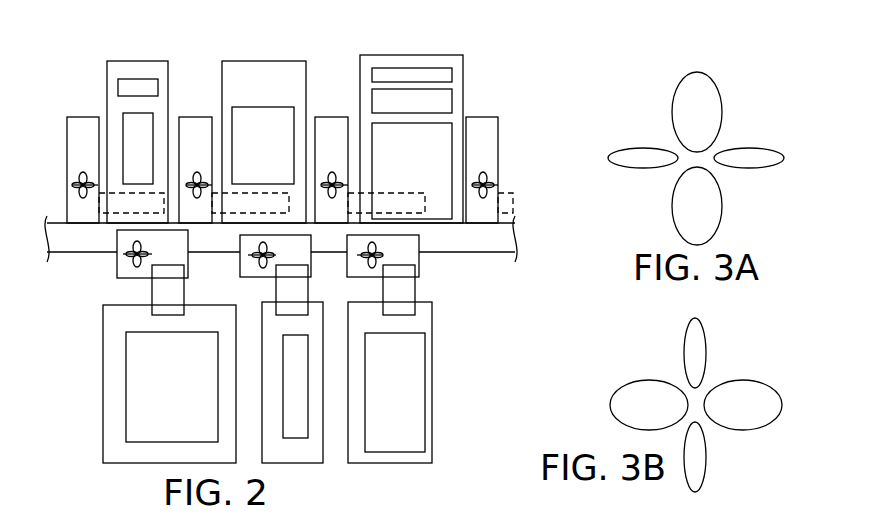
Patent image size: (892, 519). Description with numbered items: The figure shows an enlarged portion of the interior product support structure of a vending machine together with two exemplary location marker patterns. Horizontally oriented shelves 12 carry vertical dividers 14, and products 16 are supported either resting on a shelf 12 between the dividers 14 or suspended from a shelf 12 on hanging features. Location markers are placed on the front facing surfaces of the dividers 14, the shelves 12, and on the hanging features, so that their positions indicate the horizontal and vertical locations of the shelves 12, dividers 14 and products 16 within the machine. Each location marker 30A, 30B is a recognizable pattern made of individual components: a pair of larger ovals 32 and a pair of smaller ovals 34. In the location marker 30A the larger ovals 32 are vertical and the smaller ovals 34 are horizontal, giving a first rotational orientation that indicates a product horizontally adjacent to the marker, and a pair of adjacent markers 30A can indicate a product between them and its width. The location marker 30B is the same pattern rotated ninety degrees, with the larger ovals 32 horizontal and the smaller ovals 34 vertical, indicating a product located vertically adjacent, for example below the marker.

In FIG. 2, the shelf 12 is at (481, 240).
In FIG. 2, the vertical divider 14 is at (83, 127).
In FIG. 2, the product 16 is at (133, 67).
In FIG. 2, the location marker 30A is at (72, 185).
In FIG. 3A, the location marker 30A is at (751, 117).
In FIG. 2, the location marker 30B is at (130, 262).
In FIG. 3B, the location marker 30B is at (733, 359).
In FIG. 3A, the larger oval 32 is at (682, 93).
In FIG. 3B, the larger oval 32 is at (635, 388).
In FIG. 3A, the smaller oval 34 is at (633, 152).
In FIG. 3B, the smaller oval 34 is at (692, 338).